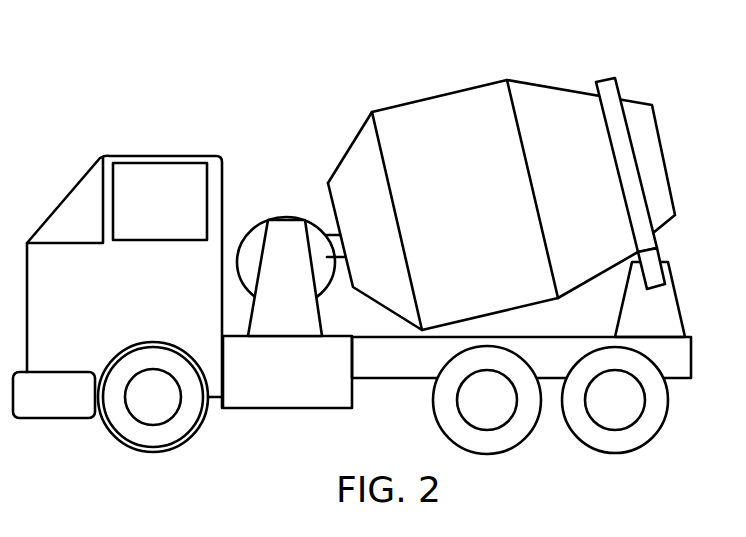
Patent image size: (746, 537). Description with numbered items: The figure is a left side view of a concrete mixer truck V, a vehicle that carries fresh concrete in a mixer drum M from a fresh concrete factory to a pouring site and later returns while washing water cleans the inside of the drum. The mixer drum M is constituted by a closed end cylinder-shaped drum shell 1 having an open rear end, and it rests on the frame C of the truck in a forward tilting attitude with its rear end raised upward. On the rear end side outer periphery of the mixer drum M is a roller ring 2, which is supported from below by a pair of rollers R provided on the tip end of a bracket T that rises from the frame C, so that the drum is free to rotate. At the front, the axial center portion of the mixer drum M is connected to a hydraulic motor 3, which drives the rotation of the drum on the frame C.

The drum shell 1 is at (507, 79).
The roller ring 2 is at (605, 82).
The hydraulic motor 3 is at (248, 233).
The mixer drum M is at (640, 98).
The concrete mixer truck V is at (77, 163).
The roller R is at (658, 256).
The bracket T is at (665, 306).
The frame C is at (672, 366).